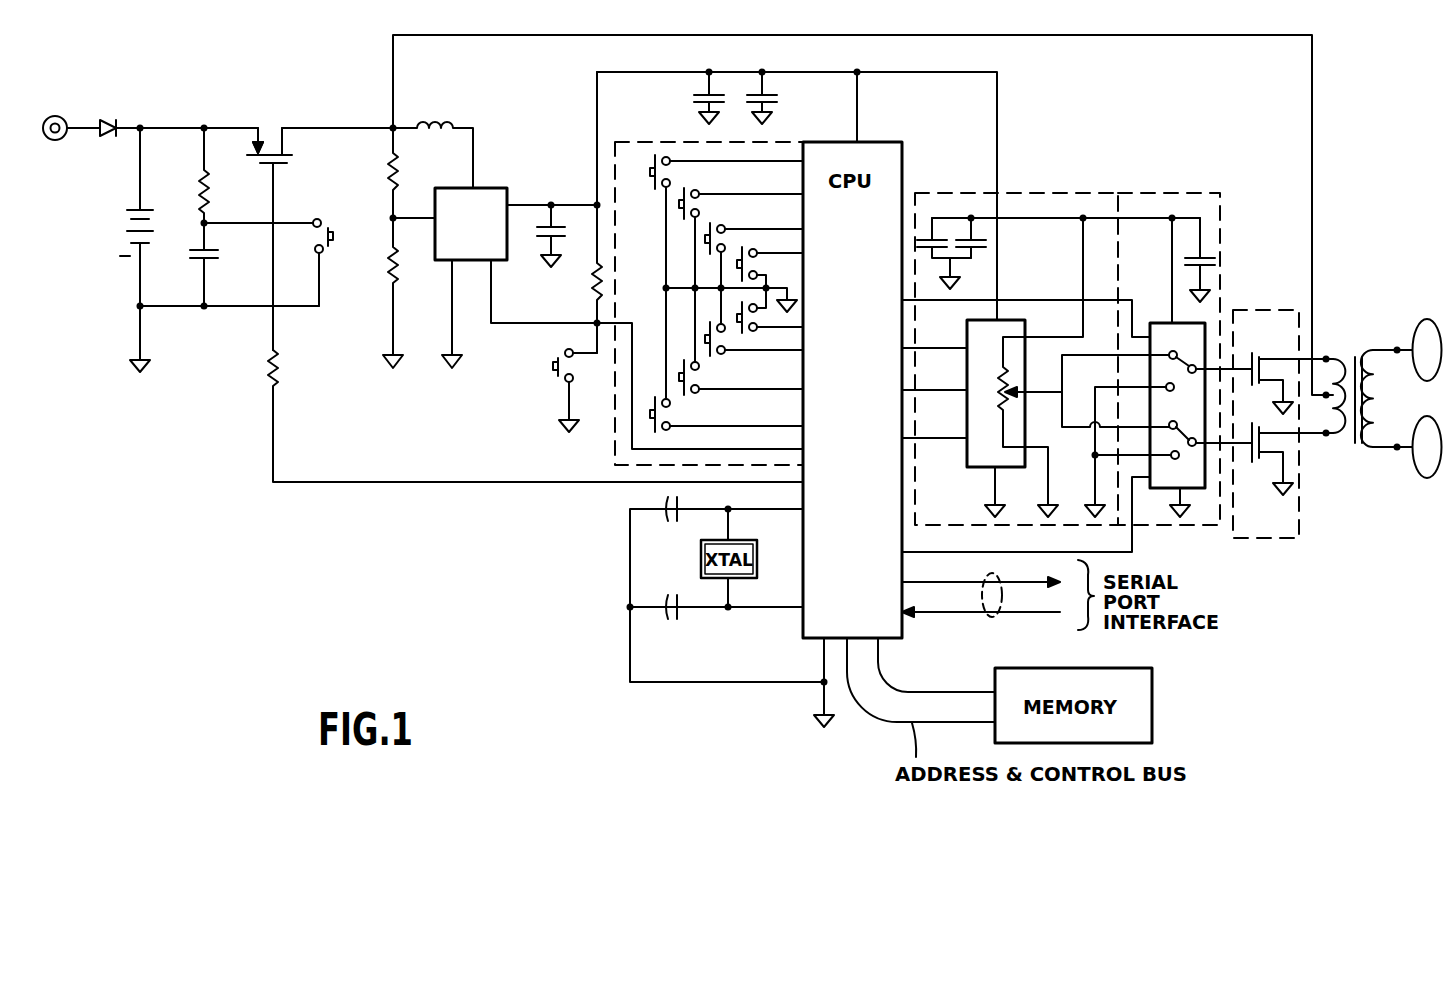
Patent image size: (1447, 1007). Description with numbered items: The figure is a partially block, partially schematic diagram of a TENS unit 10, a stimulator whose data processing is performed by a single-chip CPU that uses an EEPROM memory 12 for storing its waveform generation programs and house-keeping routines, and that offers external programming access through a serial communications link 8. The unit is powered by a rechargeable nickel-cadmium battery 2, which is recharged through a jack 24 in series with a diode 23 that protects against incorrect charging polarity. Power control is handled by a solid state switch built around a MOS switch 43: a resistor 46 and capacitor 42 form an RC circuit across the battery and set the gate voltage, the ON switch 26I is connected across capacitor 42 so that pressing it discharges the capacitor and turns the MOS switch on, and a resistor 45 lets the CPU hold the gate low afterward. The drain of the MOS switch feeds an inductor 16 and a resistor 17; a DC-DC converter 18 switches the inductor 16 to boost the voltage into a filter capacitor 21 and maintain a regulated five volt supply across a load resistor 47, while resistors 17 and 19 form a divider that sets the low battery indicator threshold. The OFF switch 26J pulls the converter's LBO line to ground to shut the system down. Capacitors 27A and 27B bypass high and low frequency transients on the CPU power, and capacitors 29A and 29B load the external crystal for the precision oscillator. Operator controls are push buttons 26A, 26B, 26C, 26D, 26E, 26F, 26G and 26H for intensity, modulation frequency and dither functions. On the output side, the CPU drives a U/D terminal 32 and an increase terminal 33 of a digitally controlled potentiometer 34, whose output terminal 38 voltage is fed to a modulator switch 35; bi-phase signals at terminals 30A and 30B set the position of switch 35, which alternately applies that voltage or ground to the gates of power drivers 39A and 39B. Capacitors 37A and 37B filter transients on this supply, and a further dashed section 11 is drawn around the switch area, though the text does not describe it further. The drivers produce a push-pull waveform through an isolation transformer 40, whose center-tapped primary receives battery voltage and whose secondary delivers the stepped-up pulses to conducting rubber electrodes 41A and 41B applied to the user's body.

The battery 2 is at (120, 228).
The serial communications link 8 is at (992, 620).
The TENS unit 10 is at (1098, 190).
The switching circuit section 11 is at (1173, 190).
The memory 12 is at (1261, 308).
The inductor 16 is at (452, 117).
The resistor 17 is at (390, 171).
The DC-DC converter 18 is at (498, 186).
The resistor 19 is at (393, 278).
The filter capacitor 21 is at (548, 232).
The diode 23 is at (107, 117).
The jack 24 is at (57, 114).
The increase fixed intensity switch 26A is at (660, 158).
The decrease fixed intensity switch 26B is at (670, 429).
The increase fixed modulation frequency switch 26C is at (698, 190).
The decrease fixed modulation frequency switch 26D is at (699, 392).
The frequency dither toggle switch 26E is at (724, 226).
The intensity dither toggle switch 26F is at (724, 353).
The program 1 dither toggle switch 26G is at (754, 250).
The program 2 dither toggle switch 26H is at (754, 330).
The ON switch 26I is at (322, 254).
The OFF switch 26J is at (560, 385).
The bypass capacitor 27A is at (700, 98).
The bypass capacitor 27B is at (772, 98).
The capacitor 29A is at (668, 523).
The capacitor 29B is at (668, 621).
The terminal 30A is at (1026, 318).
The terminal 30B is at (1026, 514).
The U/D terminal 32 is at (934, 359).
The terminal 33 is at (934, 402).
The digitally controlled potentiometer 34 is at (1028, 332).
The modulator switch 35 is at (1164, 320).
The capacitor 37A is at (936, 238).
The capacitor 37B is at (990, 250).
The output terminal 38 is at (1037, 394).
The power driver 39A is at (1270, 343).
The power driver 39B is at (1255, 470).
The isolation transformer 40 is at (1360, 448).
The electrode 41A is at (1428, 320).
The electrode 41B is at (1432, 480).
The capacitor 42 is at (196, 264).
The MOS switch 43 is at (262, 170).
The resistor 45 is at (267, 376).
The resistor 46 is at (200, 186).
The resistor 47 is at (591, 279).